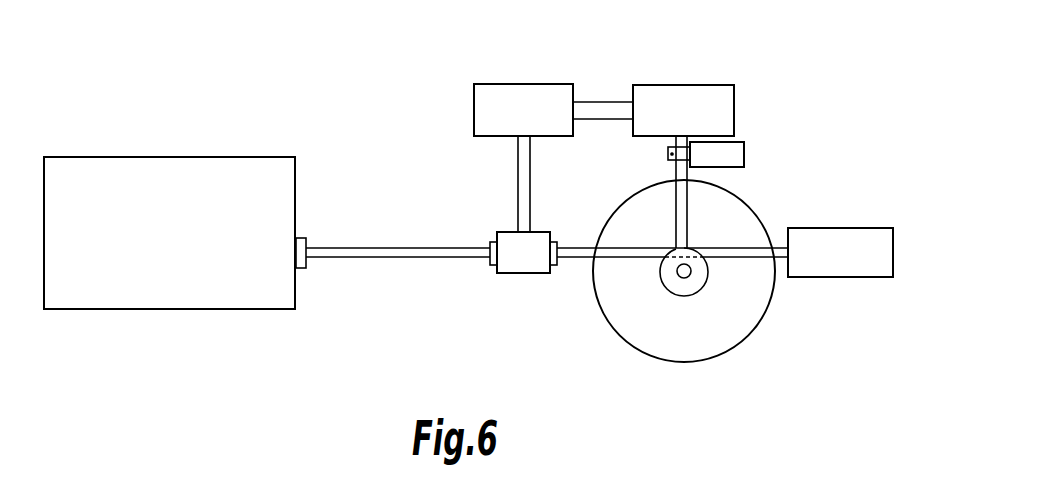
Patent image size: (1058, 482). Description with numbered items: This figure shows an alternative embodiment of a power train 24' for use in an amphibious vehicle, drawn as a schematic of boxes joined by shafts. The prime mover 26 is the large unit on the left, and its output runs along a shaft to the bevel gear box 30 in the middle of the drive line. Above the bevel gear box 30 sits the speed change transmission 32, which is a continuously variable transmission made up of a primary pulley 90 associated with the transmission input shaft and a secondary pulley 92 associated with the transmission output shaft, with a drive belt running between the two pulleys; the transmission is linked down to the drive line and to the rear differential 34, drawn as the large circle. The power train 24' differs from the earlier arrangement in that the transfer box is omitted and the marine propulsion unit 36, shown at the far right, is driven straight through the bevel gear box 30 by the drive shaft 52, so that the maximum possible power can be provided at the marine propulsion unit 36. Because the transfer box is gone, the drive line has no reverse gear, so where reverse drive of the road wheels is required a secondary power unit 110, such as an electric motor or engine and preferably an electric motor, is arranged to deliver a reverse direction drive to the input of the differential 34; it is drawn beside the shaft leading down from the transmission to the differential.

The power train 24' is at (845, 31).
The prime mover 26 is at (93, 172).
The bevel gear box 30 is at (523, 262).
The speed change transmission 32 is at (737, 66).
The rear differential 34 is at (690, 283).
The marine propulsion unit 36 is at (862, 240).
The drive shaft 52 is at (580, 250).
The primary pulley 90 is at (486, 103).
The secondary pulley 92 is at (722, 103).
The secondary power unit 110 is at (740, 153).